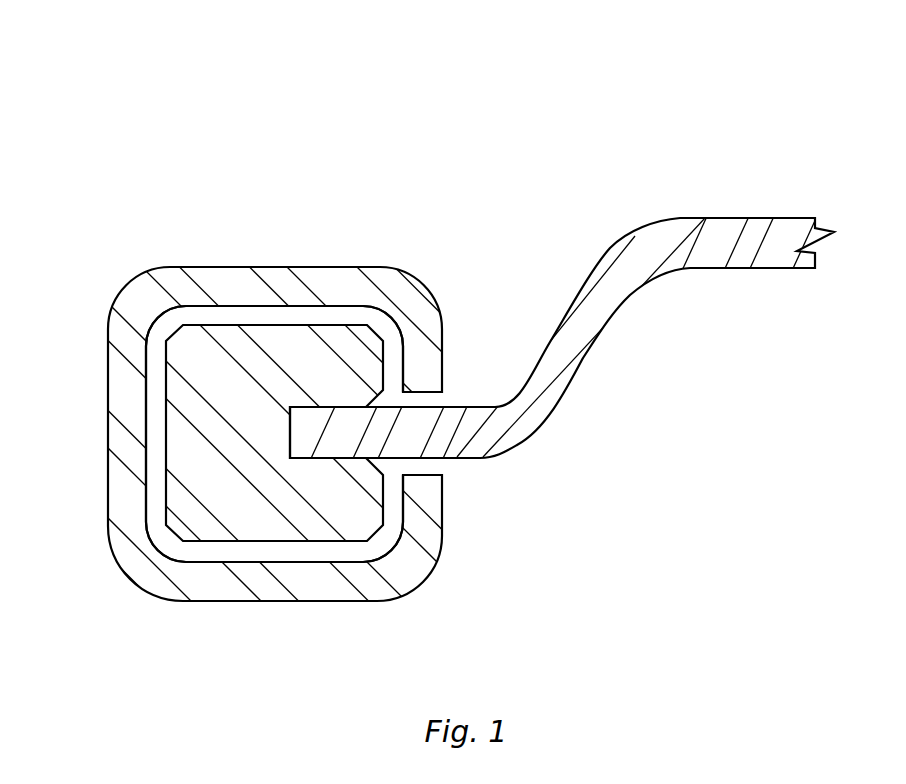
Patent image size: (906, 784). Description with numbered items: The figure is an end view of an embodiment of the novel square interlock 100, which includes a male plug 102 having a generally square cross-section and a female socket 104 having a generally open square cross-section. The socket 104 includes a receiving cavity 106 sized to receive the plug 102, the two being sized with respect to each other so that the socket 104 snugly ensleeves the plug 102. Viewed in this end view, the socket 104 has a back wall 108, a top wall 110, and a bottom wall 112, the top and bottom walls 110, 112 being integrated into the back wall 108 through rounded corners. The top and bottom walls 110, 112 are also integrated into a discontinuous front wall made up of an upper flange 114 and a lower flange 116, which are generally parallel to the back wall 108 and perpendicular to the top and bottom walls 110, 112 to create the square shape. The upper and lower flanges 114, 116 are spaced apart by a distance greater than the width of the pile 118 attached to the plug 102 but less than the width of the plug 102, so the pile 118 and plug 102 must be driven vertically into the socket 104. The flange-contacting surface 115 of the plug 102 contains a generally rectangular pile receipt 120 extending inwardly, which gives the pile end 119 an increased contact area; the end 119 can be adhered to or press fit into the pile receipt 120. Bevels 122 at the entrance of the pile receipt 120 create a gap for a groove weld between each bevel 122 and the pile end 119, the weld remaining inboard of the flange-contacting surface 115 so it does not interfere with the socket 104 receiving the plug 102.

The interlock 100 is at (417, 359).
The male plug 102 is at (347, 517).
The female socket 104 is at (407, 272).
The receiving cavity 106 is at (170, 327).
The back wall 108 is at (122, 472).
The top wall 110 is at (244, 265).
The bottom wall 112 is at (265, 585).
The upper flange 114 is at (418, 366).
The flange-contacting surface 115 is at (387, 356).
The lower flange 116 is at (430, 505).
The pile 118 is at (565, 390).
The pile end 119 is at (313, 433).
The pile receipt 120 is at (288, 460).
The bevels 122 is at (375, 385).